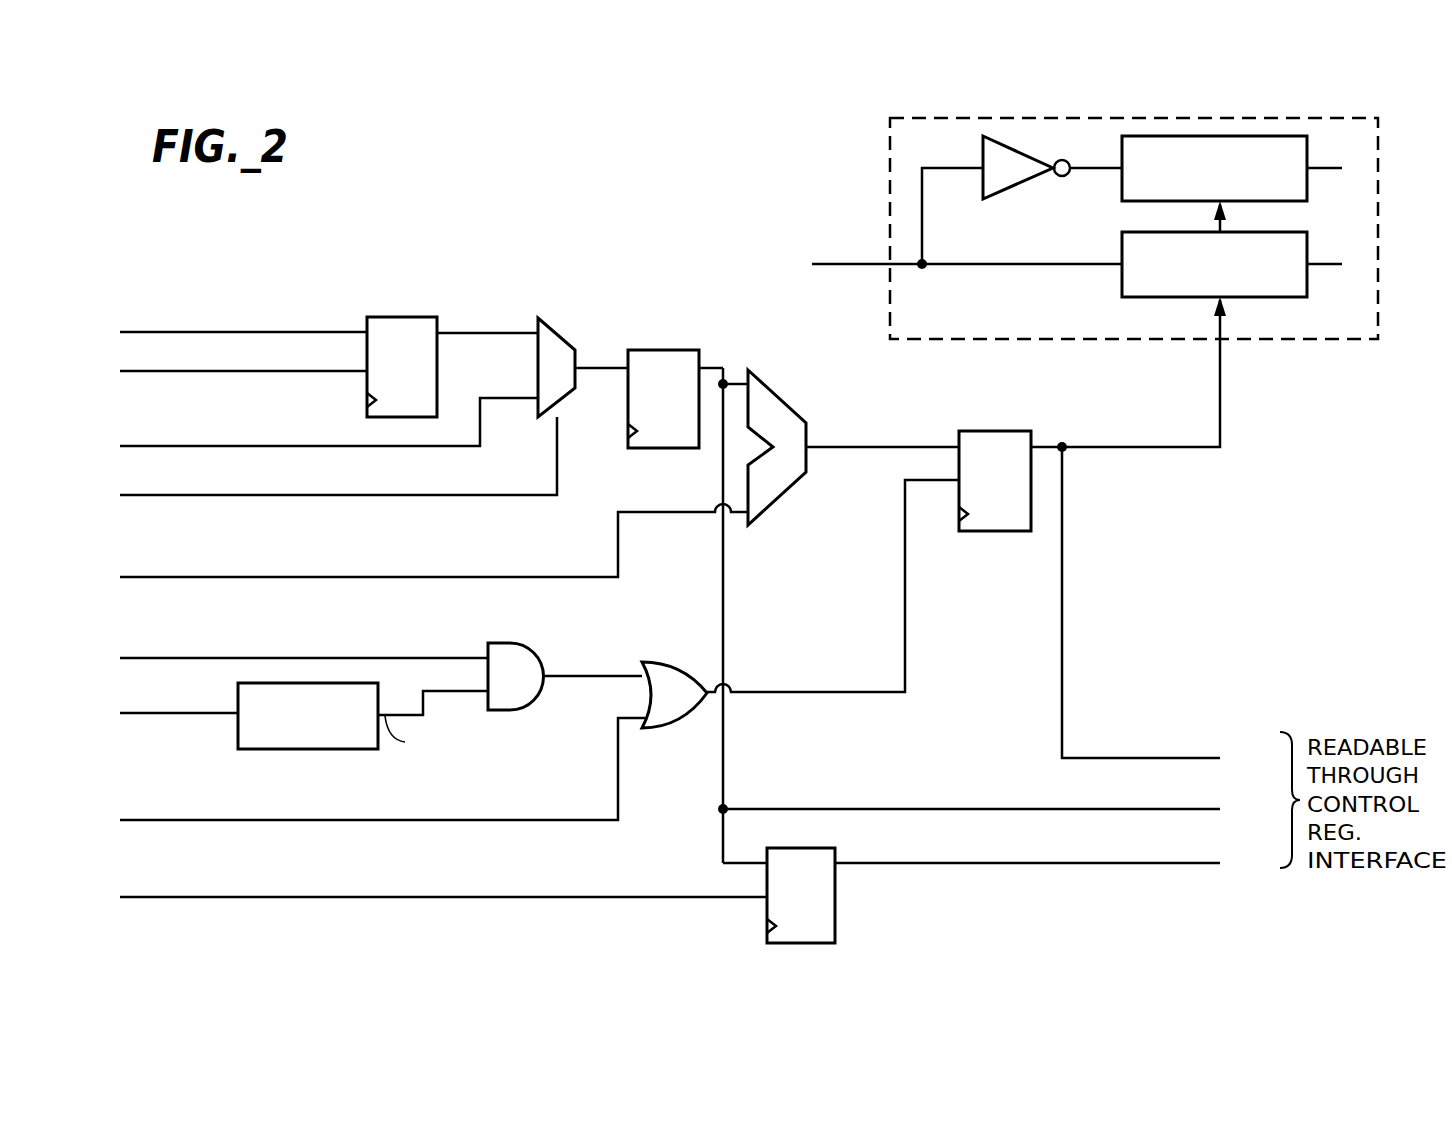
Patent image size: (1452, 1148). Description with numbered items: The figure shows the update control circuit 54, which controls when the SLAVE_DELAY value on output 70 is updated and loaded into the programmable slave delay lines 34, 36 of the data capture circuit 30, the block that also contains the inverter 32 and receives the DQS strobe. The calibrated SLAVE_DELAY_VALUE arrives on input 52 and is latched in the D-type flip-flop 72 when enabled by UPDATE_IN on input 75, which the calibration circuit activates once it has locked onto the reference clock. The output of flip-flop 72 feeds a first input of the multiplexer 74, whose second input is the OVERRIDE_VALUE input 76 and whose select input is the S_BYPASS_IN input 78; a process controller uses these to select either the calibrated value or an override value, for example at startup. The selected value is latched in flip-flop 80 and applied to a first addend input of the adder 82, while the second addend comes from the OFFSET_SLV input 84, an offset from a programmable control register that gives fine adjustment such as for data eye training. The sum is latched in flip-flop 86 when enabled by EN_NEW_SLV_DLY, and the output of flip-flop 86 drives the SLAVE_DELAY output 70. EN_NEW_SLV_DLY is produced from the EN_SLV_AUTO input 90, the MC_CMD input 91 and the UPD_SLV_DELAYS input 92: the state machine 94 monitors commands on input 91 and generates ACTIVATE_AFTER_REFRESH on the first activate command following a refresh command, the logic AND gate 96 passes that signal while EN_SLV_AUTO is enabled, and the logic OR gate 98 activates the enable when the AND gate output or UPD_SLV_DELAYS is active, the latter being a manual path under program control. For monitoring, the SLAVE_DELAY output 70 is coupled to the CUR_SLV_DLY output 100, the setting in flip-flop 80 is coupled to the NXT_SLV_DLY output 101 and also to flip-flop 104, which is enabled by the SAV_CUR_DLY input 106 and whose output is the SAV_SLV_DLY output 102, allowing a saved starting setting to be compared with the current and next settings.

The data capture circuit 30 is at (890, 196).
The inverter 32 is at (1015, 181).
The programmable slave delay line 34 is at (1297, 201).
The programmable slave delay line 36 is at (1297, 297).
The SLAVE_DELAY_VALUE input 52 is at (275, 332).
The update control circuit 54 is at (553, 210).
The SLAVE_DELAY output 70 is at (1163, 447).
The D-type flip-flop 72 is at (402, 317).
The multiplexer 74 is at (566, 334).
The UPDATE_IN input 75 is at (275, 371).
The OVERRIDE_VALUE input 76 is at (400, 446).
The S_BYPASS_IN input 78 is at (295, 495).
The flip-flop 80 is at (660, 350).
The adder 82 is at (782, 397).
The OFFSET_SLV input 84 is at (280, 577).
The flip-flop 86 is at (993, 431).
The EN_SLV_AUTO input 90 is at (307, 658).
The MC_CMD input 91 is at (155, 713).
The UPD_SLV_DELAYS input 92 is at (340, 820).
The state machine 94 is at (262, 749).
The logic AND gate 96 is at (500, 643).
The logic OR gate 98 is at (673, 662).
The CUR_SLV_DLY output 100 is at (1200, 758).
The NXT_SLV_DLY output 101 is at (1200, 809).
The SAV_SLV_DLY output 102 is at (1200, 863).
The flip-flop 104 is at (835, 888).
The SAV_CUR_DLY input 106 is at (300, 897).